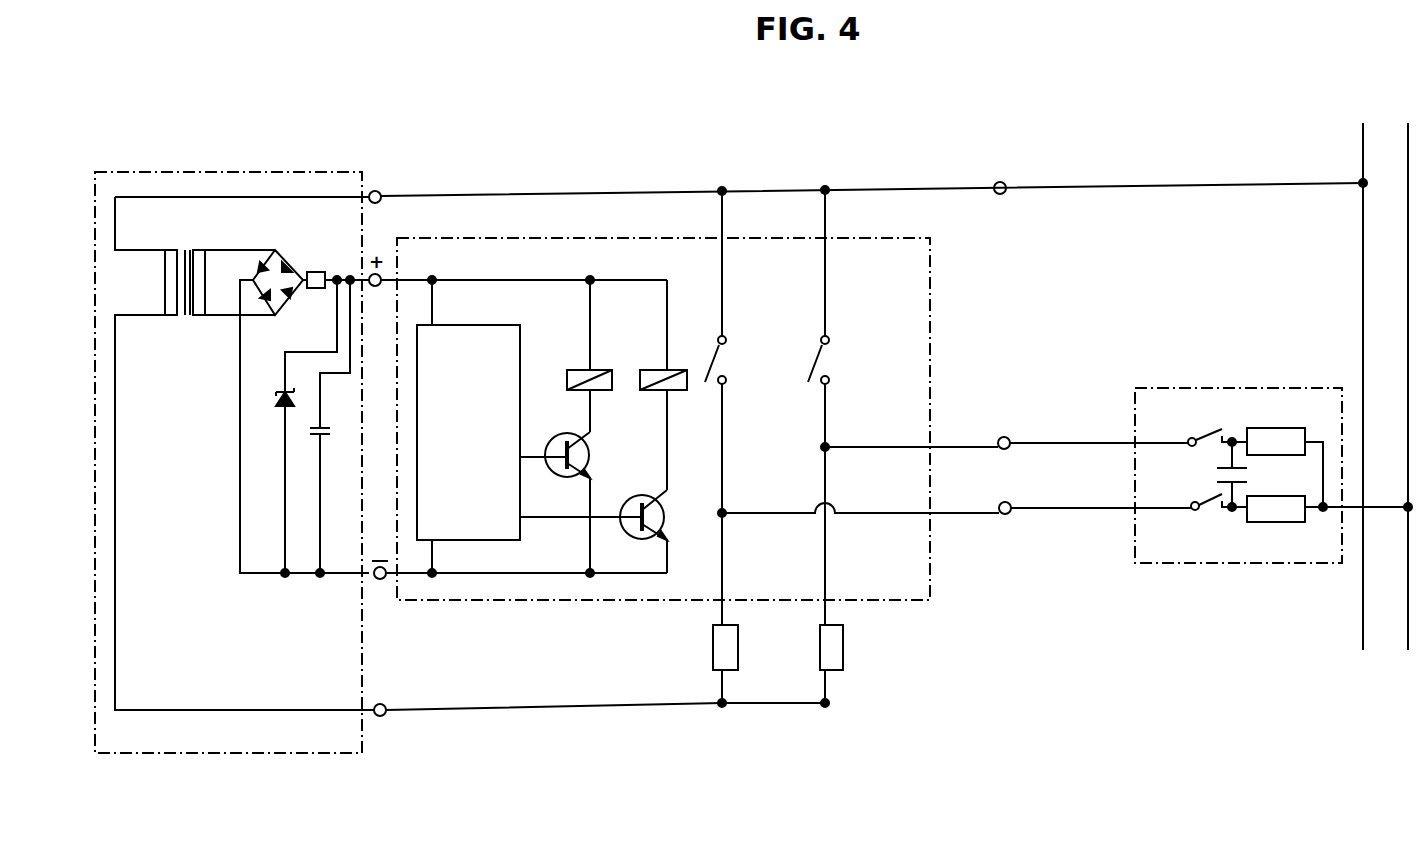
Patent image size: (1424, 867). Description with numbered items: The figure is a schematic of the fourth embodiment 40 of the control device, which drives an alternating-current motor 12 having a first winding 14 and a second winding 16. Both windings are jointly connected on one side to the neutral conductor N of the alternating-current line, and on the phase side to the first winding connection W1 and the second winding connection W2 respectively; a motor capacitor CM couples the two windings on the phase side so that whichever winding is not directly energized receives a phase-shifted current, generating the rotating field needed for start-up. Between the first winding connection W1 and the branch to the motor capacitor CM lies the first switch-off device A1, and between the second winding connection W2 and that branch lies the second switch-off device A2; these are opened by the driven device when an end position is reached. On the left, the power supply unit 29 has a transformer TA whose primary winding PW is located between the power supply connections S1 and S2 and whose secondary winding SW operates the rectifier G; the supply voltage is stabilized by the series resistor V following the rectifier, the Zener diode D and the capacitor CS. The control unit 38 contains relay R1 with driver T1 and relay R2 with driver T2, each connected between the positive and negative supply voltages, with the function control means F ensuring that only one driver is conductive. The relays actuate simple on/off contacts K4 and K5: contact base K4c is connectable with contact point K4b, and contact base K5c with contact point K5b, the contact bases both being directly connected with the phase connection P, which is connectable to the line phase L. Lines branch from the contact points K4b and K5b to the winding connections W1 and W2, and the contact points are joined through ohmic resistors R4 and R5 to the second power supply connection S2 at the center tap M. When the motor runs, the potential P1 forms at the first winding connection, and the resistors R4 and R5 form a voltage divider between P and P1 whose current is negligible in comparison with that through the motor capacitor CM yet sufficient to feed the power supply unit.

The power supply unit 29 is at (229, 168).
The fourth embodiment 40 is at (577, 162).
The control unit 38 is at (623, 234).
The alternating-current motor 12 is at (1243, 385).
The first winding 14 is at (1284, 515).
The second winding 16 is at (1282, 437).
The power supply connection S1 is at (381, 193).
The second power supply connection S2 is at (386, 714).
The phase connection P is at (1000, 182).
The phase L is at (1361, 375).
The neutral conductor N is at (1407, 375).
The primary winding PW is at (166, 277).
The secondary winding SW is at (216, 282).
The transformer TA is at (188, 326).
The rectifier G is at (287, 270).
The series resistor V is at (318, 272).
The Zener diode D is at (276, 396).
The capacitor CS is at (318, 436).
The function control means F is at (468, 426).
The relay R1 is at (575, 375).
The relay R2 is at (650, 375).
The driver T1 is at (556, 440).
The driver T2 is at (631, 500).
The contact K4 is at (714, 347).
The contact base K4c is at (725, 349).
The contact point K4b is at (728, 382).
The contact K5 is at (817, 347).
The contact base K5c is at (842, 349).
The contact point K5b is at (836, 382).
The ohmic resistor R4 is at (713, 641).
The ohmic resistor R5 is at (843, 641).
The center tap M is at (607, 726).
The first winding connection W1 is at (1007, 514).
The second winding connection W2 is at (1002, 437).
The first switch-off device A1 is at (1218, 505).
The second switch-off device A2 is at (1211, 432).
The potential P1 is at (1233, 512).
The motor capacitor CM is at (1208, 476).